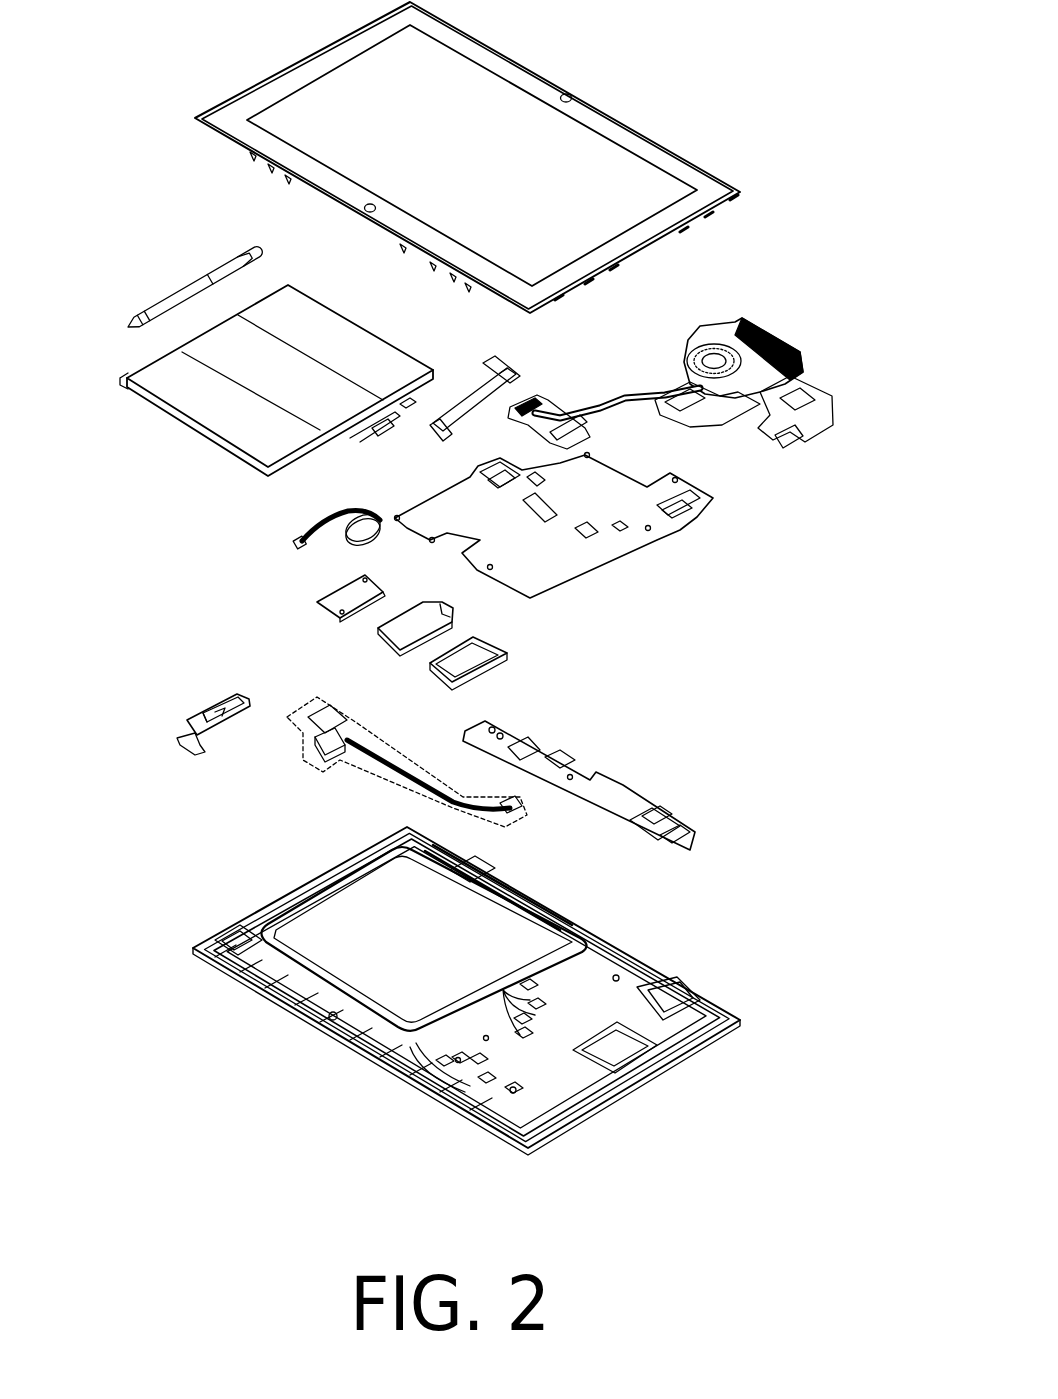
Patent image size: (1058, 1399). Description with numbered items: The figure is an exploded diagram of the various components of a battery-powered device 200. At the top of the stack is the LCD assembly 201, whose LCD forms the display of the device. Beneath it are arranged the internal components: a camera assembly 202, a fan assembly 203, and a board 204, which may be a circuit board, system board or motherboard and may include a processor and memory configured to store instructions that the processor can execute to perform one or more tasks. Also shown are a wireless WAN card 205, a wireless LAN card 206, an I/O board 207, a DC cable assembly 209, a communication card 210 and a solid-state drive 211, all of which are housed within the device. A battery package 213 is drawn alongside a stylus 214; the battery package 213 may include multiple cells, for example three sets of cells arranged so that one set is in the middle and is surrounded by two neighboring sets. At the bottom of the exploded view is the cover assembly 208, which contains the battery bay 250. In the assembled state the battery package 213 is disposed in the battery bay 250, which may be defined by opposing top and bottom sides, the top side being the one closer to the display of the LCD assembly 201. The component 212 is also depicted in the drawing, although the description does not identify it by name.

The device 200 is at (182, 19).
The LCD assembly 201 is at (740, 182).
The camera assembly 202 is at (518, 368).
The fan assembly 203 is at (800, 377).
The board 204 is at (647, 527).
The wireless WAN card 205 is at (445, 636).
The wireless LAN card 206 is at (487, 667).
The I/O board 207 is at (640, 797).
The cover assembly 208 is at (737, 1023).
The DC cable assembly 209 is at (325, 765).
The communication card 210 is at (200, 717).
The solid-state drive 211 is at (350, 586).
The coin cell battery 212 is at (308, 532).
The battery package 213 is at (155, 365).
The stylus 214 is at (186, 284).
The battery bay 250 is at (362, 993).